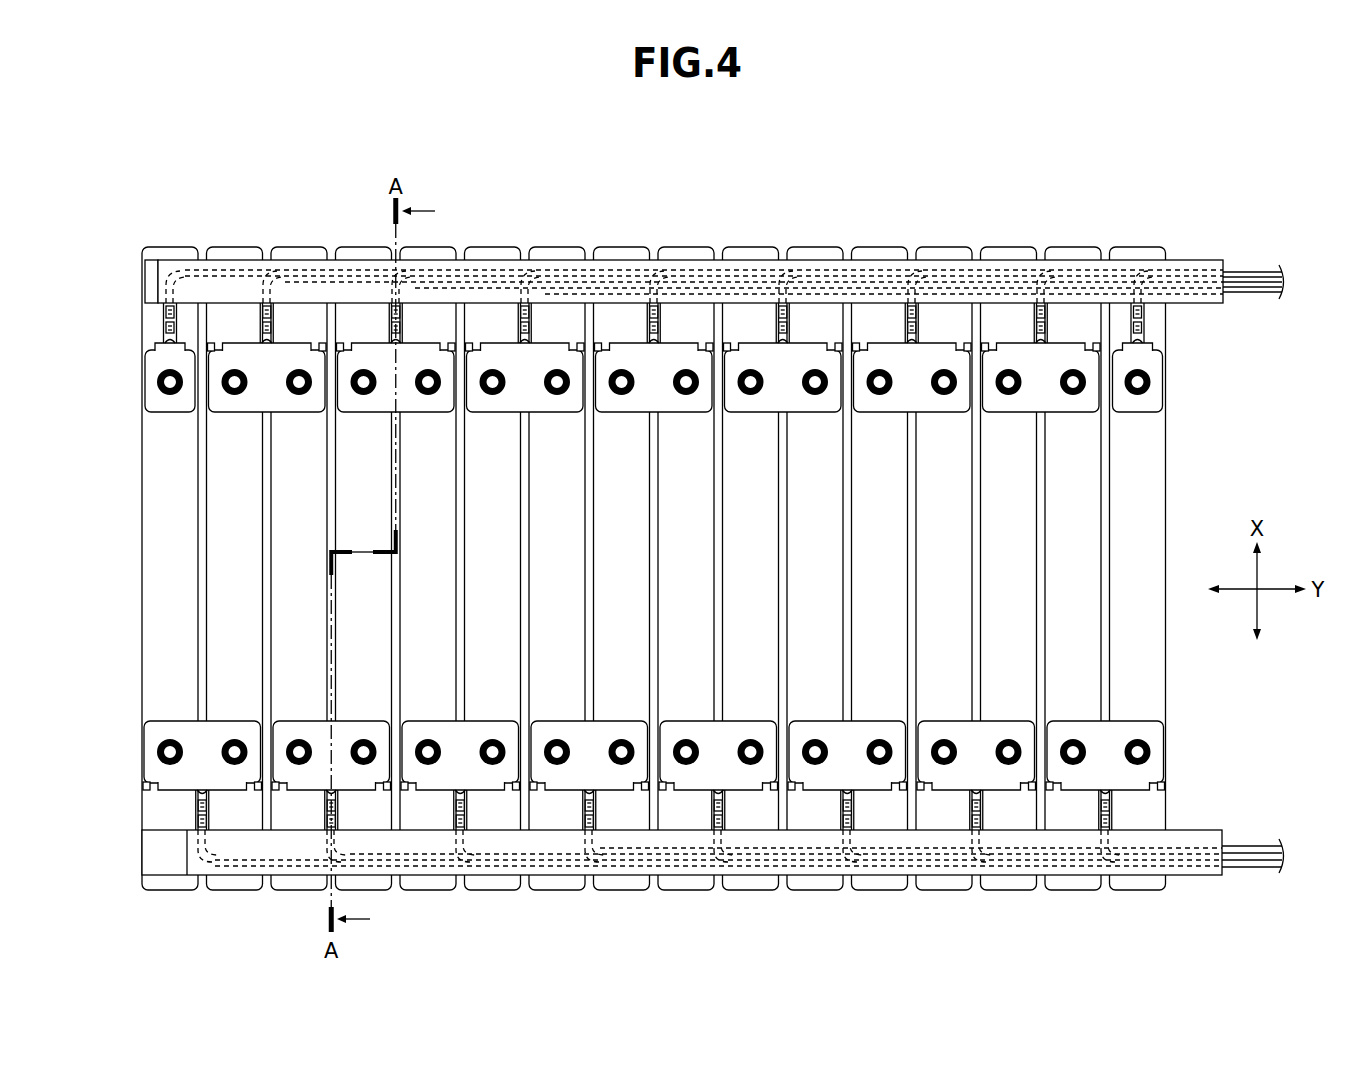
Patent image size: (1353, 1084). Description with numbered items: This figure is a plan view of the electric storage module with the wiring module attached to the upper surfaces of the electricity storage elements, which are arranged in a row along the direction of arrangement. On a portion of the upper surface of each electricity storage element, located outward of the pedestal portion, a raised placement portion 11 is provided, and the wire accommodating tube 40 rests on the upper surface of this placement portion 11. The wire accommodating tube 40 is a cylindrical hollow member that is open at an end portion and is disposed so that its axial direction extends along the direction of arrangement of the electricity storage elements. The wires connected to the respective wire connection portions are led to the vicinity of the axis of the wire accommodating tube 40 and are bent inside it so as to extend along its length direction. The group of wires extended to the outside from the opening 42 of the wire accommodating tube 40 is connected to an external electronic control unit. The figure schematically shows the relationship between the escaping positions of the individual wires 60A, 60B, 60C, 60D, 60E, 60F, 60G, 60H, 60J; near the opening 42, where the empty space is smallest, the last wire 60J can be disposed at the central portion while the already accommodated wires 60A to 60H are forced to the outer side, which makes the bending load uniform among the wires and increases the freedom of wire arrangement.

The placement portion 11 is at (155, 285).
The wire accommodating tube 40 is at (1189, 246).
The opening 42 is at (1236, 279).
The wire 60A is at (188, 268).
The wire 60B is at (293, 272).
The wire 60C is at (440, 272).
The wire 60D is at (546, 272).
The wire 60E is at (676, 272).
The wire 60F is at (800, 272).
The wire 60G is at (930, 272).
The wire 60H is at (1060, 272).
The wire 60J is at (1150, 275).